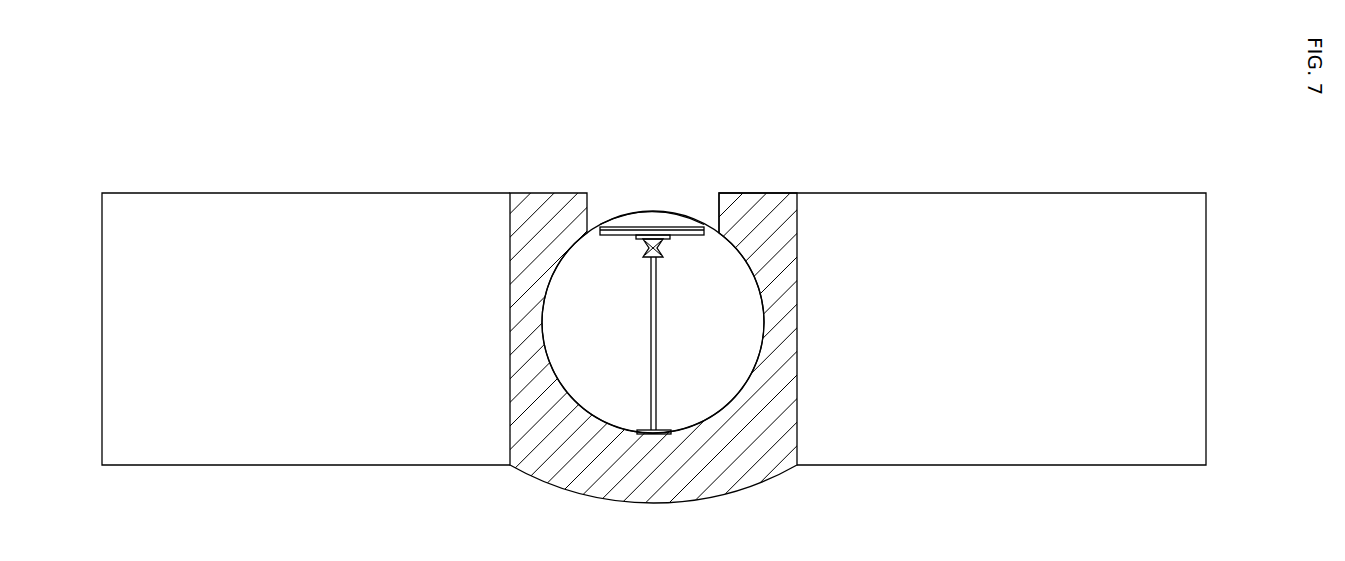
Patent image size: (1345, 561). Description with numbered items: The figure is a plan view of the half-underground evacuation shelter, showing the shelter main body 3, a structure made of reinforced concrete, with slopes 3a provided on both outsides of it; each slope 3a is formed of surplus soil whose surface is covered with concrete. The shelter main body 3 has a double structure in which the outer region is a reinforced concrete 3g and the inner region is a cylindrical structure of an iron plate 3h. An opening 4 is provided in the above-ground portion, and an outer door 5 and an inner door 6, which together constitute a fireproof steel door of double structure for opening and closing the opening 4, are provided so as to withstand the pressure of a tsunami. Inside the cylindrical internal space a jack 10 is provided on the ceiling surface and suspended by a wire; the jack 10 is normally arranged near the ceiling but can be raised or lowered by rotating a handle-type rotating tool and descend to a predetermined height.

The shelter main body 3 is at (750, 193).
The slope 3a is at (288, 225).
The reinforced concrete 3g is at (782, 218).
The iron plate 3h is at (678, 424).
The opening 4 is at (707, 213).
The outer door 5 is at (650, 227).
The inner door 6 is at (615, 218).
The jack 10 is at (654, 372).